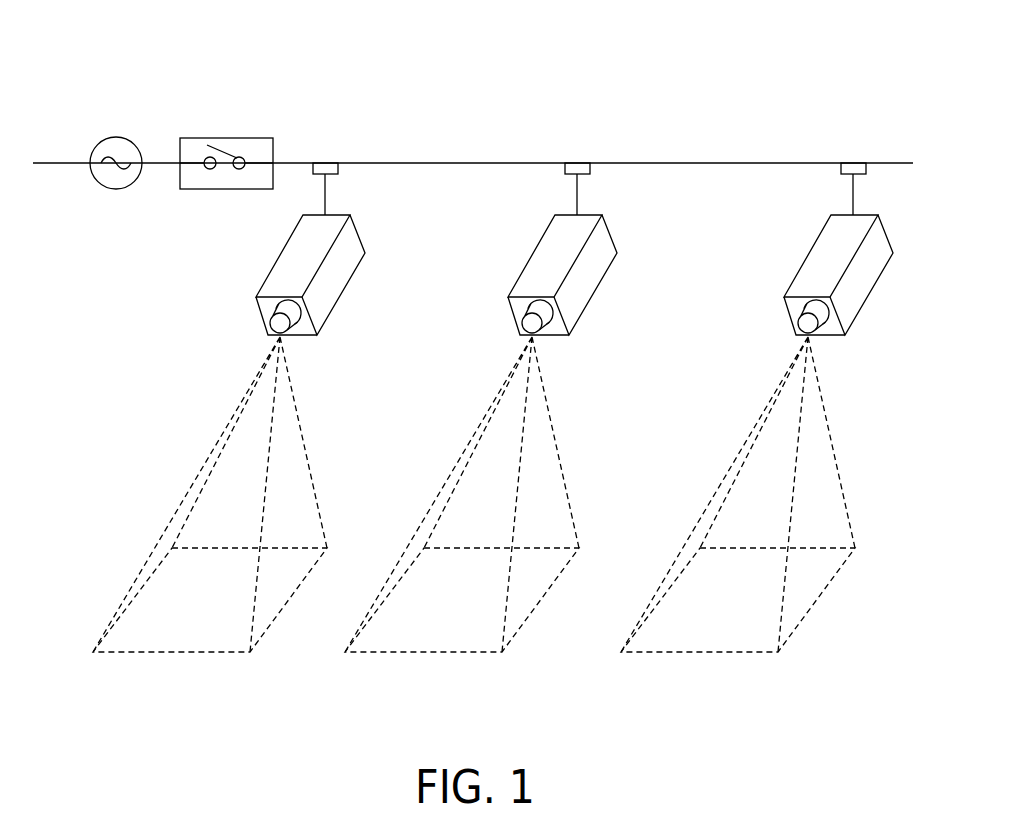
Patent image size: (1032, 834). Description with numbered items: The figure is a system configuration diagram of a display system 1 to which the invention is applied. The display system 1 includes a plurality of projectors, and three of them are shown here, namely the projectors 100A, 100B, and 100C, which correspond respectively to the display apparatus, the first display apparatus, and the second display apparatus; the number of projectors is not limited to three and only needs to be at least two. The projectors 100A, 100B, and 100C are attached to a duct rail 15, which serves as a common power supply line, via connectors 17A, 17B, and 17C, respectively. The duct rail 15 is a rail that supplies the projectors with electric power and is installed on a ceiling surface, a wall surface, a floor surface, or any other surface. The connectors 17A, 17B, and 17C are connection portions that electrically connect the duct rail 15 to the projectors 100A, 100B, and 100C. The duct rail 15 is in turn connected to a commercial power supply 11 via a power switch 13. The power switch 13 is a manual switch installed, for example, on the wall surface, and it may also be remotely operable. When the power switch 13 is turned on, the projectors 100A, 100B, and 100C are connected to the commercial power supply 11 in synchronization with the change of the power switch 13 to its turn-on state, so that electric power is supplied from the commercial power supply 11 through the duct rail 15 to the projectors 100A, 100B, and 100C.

The display system 1 is at (683, 105).
The commercial power supply 11 is at (125, 140).
The power switch 13 is at (203, 137).
The duct rail 15 is at (437, 162).
The connector 17A is at (340, 173).
The connector 17B is at (592, 173).
The connector 17C is at (868, 173).
The projector 100A is at (277, 265).
The projector 100B is at (529, 265).
The projector 100C is at (810, 264).